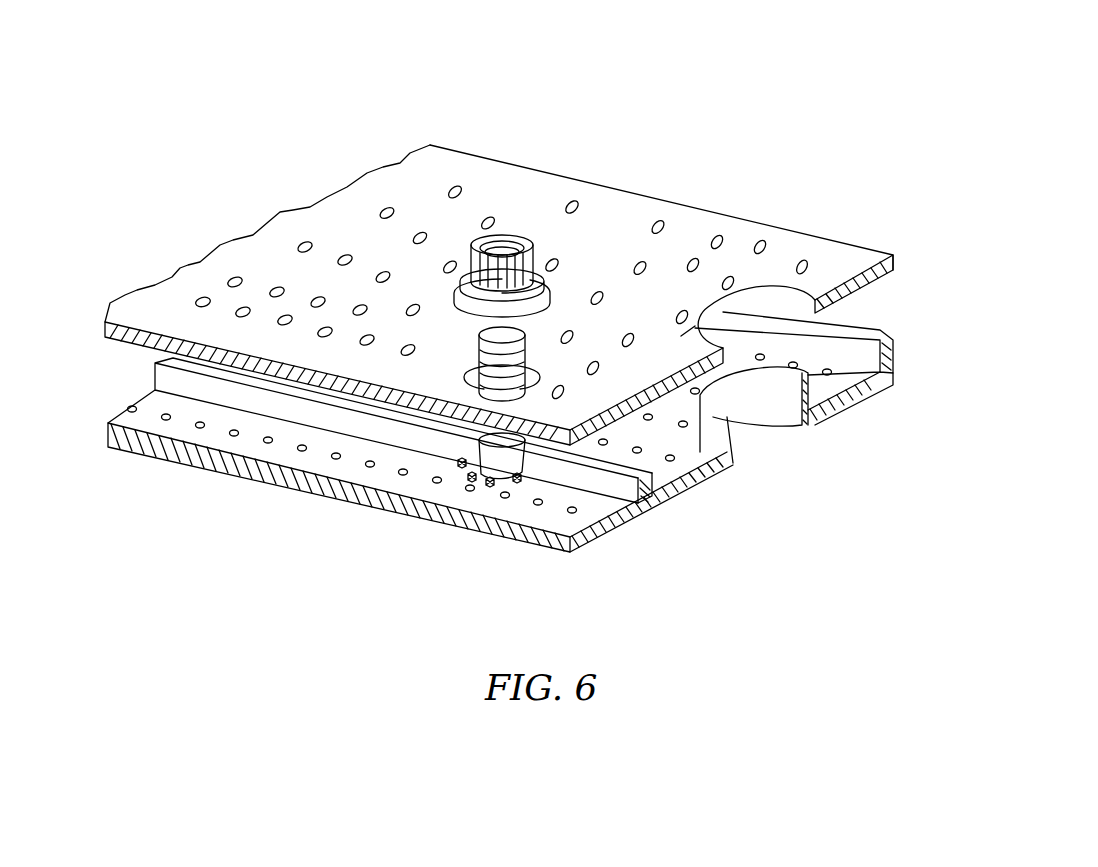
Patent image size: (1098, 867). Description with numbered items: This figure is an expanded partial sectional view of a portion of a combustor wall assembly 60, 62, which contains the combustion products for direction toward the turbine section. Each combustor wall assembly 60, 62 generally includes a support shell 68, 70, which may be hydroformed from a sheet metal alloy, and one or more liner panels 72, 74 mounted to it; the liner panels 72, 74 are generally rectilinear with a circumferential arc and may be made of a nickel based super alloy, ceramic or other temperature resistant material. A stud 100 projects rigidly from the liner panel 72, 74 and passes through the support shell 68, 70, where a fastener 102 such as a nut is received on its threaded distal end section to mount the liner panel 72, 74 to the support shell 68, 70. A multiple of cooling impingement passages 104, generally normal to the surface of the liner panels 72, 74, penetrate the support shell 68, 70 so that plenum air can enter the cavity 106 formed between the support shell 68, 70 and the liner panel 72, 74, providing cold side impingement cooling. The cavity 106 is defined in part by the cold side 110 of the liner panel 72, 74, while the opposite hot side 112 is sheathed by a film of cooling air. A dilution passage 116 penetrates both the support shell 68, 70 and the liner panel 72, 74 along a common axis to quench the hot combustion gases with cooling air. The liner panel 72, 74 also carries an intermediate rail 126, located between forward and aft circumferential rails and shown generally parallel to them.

The combustor wall assembly 60 is at (583, 336).
The combustor wall assembly 62 is at (848, 113).
The support shell 68 is at (563, 295).
The support shell 70 is at (703, 216).
The liner panel 72 is at (585, 469).
The liner panel 74 is at (922, 393).
The stud 100 is at (518, 336).
The fastener 102 is at (520, 236).
The cooling impingement passage 104 is at (312, 242).
The cavity 106 is at (940, 266).
The cold side 110 is at (688, 468).
The hot side 112 is at (628, 526).
The dilution passage 116 is at (780, 288).
The intermediate rail 126 is at (880, 340).